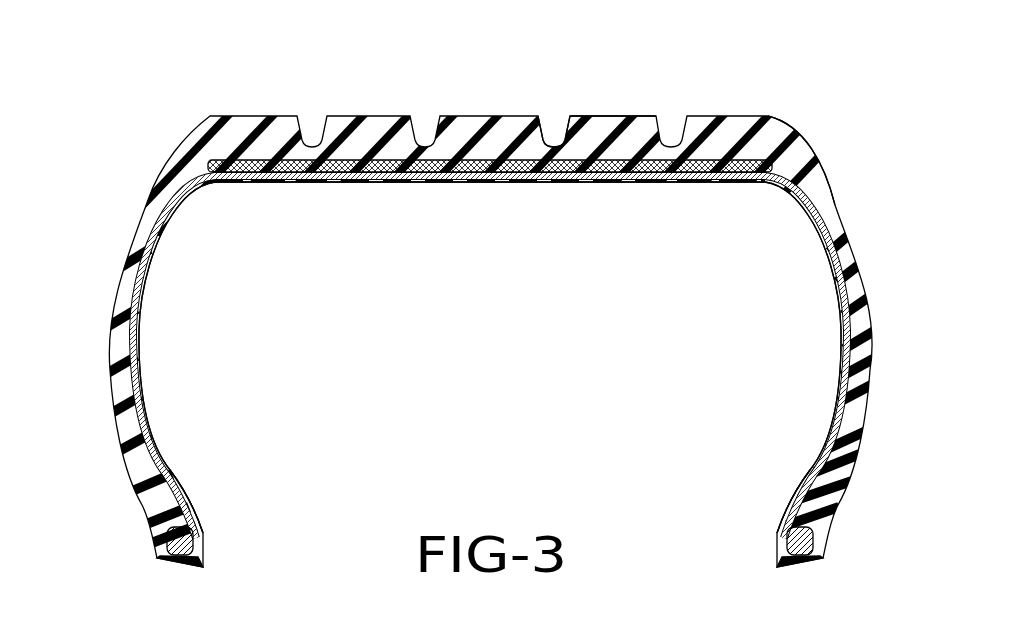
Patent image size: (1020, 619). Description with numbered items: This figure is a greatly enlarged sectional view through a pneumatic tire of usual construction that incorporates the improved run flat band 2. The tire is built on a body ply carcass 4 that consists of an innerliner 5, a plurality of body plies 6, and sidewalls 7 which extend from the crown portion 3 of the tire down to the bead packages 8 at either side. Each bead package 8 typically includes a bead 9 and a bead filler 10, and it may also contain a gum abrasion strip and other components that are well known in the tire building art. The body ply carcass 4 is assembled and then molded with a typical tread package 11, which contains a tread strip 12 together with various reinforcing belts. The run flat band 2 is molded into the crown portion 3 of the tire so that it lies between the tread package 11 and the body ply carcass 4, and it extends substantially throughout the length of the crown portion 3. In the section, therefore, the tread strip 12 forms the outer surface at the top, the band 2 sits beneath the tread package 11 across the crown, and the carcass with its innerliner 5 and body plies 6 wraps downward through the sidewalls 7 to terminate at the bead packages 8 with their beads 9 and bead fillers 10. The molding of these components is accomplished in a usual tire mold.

The run flat band 2 is at (217, 140).
The crown portion 3 is at (252, 106).
The body ply carcass 4 is at (858, 217).
The innerliner 5 is at (155, 433).
The body plies 6 is at (128, 333).
The sidewalls 7 is at (123, 290).
The bead package 8 is at (152, 567).
The bead 9 is at (187, 543).
The bead filler 10 is at (172, 488).
The tread package 11 is at (526, 99).
The tread strip 12 is at (600, 122).